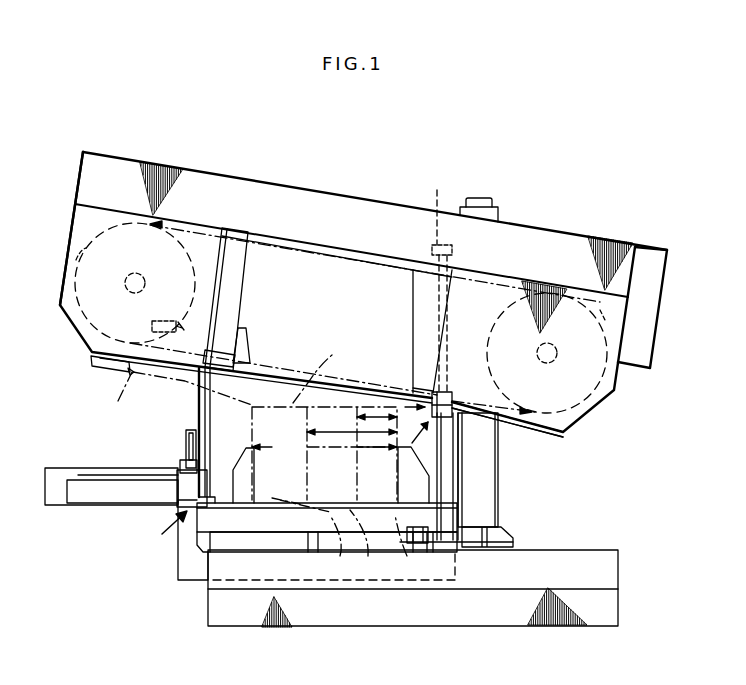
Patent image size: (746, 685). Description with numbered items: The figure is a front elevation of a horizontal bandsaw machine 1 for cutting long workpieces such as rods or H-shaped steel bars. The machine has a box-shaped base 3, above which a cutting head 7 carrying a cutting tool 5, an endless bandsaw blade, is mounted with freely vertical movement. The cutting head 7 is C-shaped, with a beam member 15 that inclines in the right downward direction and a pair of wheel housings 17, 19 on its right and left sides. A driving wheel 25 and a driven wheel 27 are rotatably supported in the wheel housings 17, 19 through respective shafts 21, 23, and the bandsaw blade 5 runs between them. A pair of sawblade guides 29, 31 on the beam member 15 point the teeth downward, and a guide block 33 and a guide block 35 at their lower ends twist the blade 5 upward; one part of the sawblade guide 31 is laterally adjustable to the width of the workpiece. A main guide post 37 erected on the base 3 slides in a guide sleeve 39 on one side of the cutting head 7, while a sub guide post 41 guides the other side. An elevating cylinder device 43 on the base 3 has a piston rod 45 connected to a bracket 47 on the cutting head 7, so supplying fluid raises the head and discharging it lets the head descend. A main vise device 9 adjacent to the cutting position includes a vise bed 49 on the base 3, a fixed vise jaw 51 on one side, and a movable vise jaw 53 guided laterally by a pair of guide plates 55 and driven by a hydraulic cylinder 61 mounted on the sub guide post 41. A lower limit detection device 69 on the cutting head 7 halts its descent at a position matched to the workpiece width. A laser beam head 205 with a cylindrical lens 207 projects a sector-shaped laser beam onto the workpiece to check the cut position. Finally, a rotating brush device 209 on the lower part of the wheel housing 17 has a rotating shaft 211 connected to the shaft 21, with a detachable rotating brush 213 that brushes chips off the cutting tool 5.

The horizontal bandsaw machine 1 is at (379, 166).
The base 3 is at (618, 573).
The cutting tool 5 is at (341, 378).
The cutting head 7 is at (341, 190).
The main vise device 9 is at (462, 490).
The beam member 15 is at (298, 200).
The wheel housing 17 is at (617, 382).
The wheel housing 19 is at (78, 228).
The shaft 21 is at (557, 352).
The shaft 23 is at (125, 283).
The driving wheel 25 is at (603, 320).
The driven wheel 27 is at (80, 250).
The sawblade guide 29 is at (420, 300).
The sawblade guide 31 is at (242, 262).
The guide block 33 is at (412, 387).
The guide block 35 is at (249, 350).
The main guide post 37 is at (498, 507).
The guide sleeve 39 is at (500, 210).
The sub guide post 41 is at (198, 392).
The elevating cylinder device 43 is at (452, 497).
The piston rod 45 is at (446, 335).
The bracket 47 is at (436, 214).
The vise bed 49 is at (250, 528).
The fixed vise jaw 51 is at (446, 470).
The movable vise jaw 53 is at (253, 482).
The guide plate 55 is at (230, 508).
The hydraulic cylinder 61 is at (110, 492).
The lower limit detection device 69 is at (160, 325).
The laser beam head 205 is at (90, 362).
The cylindrical lens 207 is at (130, 373).
The rotating brush device 209 is at (396, 475).
The rotating shaft 211 is at (470, 401).
The rotating brush 213 is at (448, 392).